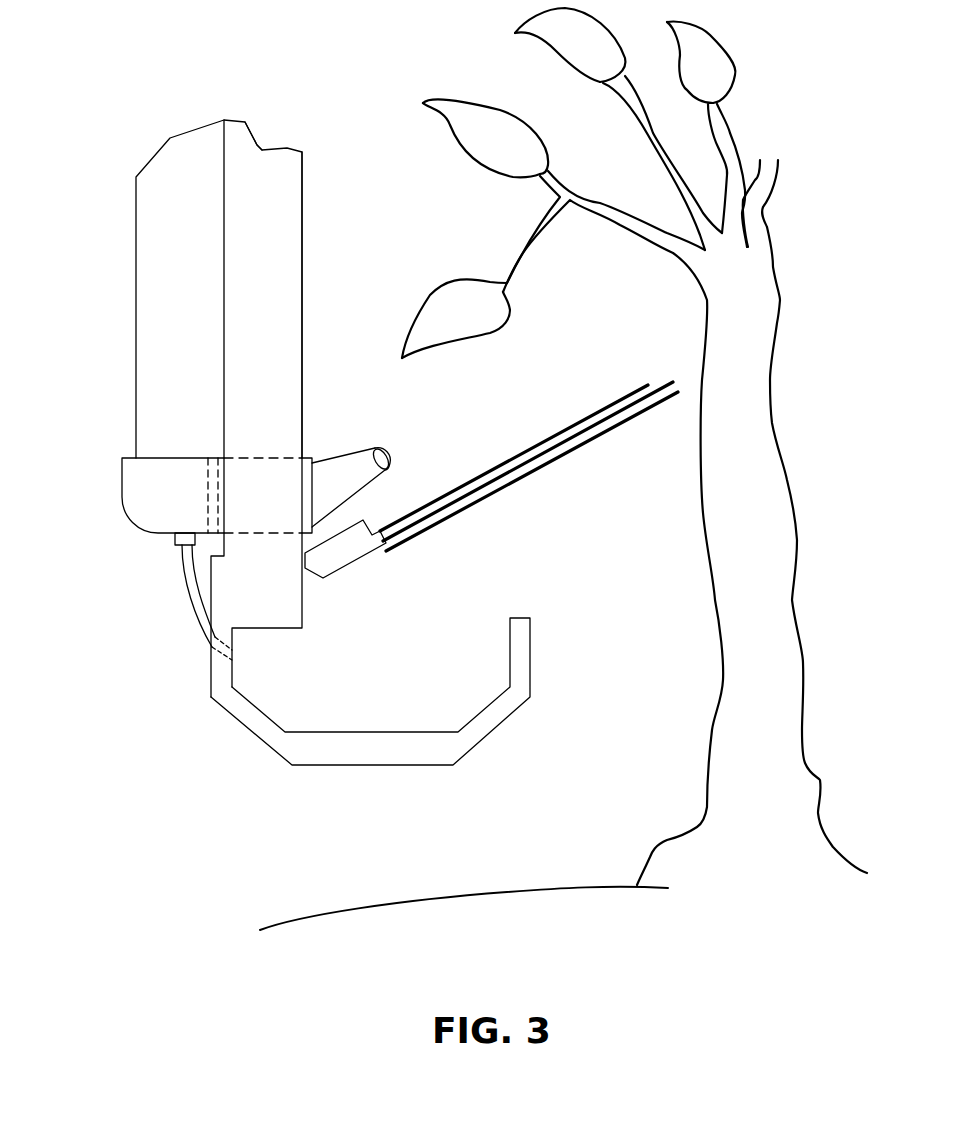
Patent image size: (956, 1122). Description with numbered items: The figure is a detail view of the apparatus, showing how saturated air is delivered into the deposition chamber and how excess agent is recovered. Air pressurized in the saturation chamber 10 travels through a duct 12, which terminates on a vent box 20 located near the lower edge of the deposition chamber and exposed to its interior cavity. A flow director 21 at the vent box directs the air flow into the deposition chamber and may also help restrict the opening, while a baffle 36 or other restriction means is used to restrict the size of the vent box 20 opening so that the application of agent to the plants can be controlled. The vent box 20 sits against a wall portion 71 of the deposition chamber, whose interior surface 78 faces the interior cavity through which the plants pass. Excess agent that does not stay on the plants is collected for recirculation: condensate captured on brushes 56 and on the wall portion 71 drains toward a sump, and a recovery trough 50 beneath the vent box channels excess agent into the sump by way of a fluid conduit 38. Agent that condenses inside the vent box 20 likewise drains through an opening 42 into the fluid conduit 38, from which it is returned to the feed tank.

The saturation chamber 10 is at (133, 402).
The ducts 12 is at (138, 243).
The vent box 20 is at (132, 495).
The flow director 21 is at (345, 452).
The baffle 36 is at (207, 498).
The fluid conduit 38 is at (193, 613).
The opening 42 is at (177, 546).
The recovery trough 50 is at (257, 728).
The brushes 56 is at (512, 485).
The wall portion 71 is at (257, 142).
The interior surface 78 is at (303, 206).